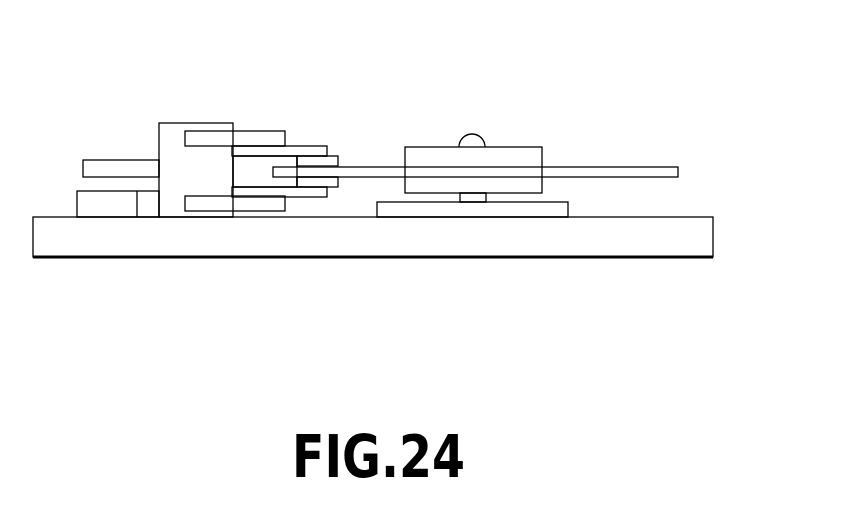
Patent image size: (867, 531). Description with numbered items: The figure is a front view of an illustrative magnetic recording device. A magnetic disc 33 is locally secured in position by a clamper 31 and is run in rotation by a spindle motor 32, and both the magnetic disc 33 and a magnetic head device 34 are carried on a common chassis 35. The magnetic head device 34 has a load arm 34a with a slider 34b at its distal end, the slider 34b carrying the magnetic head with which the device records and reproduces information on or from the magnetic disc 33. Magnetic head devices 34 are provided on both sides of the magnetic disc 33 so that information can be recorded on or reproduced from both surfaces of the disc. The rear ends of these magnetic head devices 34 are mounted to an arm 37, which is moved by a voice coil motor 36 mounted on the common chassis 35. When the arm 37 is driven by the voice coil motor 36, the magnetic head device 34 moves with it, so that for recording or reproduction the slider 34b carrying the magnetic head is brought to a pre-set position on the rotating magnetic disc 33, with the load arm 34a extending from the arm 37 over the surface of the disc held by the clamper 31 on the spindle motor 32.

The clamper 31 is at (517, 153).
The spindle motor 32 is at (525, 213).
The magnetic disc 33 is at (647, 170).
The magnetic head device 34 is at (340, 189).
The load arm 34a is at (302, 147).
The slider 34b is at (337, 157).
The common chassis 35 is at (97, 243).
The voice coil motor 36 is at (172, 157).
The arm 37 is at (257, 135).